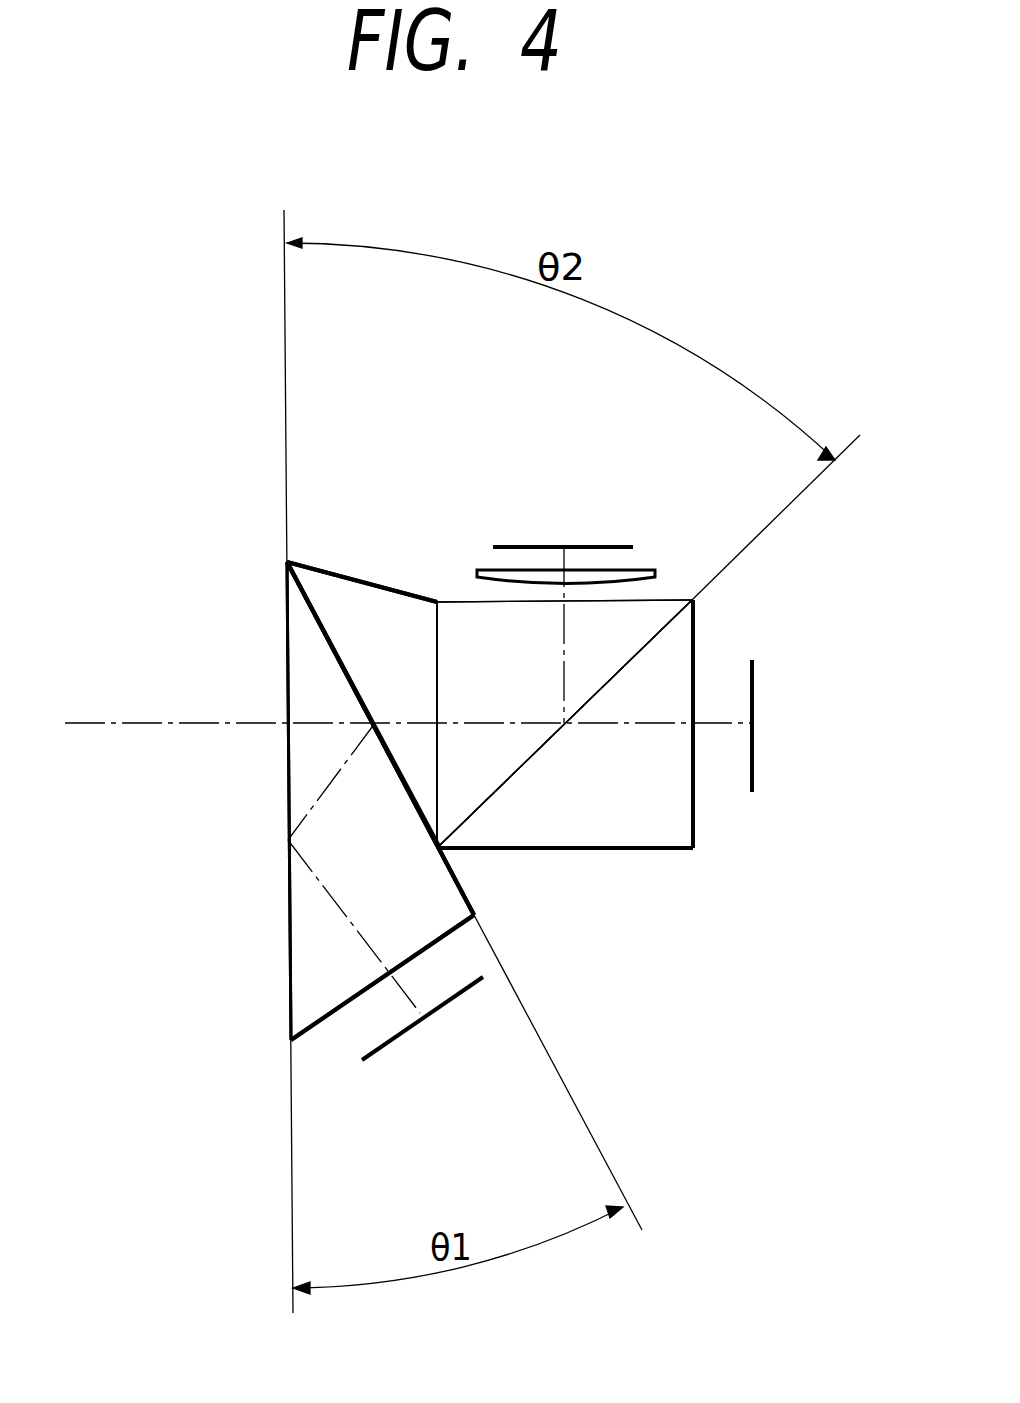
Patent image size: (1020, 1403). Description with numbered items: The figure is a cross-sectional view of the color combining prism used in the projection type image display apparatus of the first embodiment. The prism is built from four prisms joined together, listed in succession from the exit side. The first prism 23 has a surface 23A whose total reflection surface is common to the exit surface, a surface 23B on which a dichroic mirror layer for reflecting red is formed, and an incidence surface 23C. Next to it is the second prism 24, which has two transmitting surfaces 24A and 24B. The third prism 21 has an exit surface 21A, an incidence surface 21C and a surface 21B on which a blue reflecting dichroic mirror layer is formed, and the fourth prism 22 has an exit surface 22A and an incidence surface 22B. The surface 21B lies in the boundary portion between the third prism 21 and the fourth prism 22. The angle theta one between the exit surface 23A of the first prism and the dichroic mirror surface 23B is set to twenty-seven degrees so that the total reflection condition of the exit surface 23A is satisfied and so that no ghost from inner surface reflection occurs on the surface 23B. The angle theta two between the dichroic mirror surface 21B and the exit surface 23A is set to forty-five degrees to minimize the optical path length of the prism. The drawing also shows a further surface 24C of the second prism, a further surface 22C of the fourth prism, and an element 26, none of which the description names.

The third prism 21 is at (657, 600).
The exit surface 21A is at (433, 637).
The surface on which blue reflecting dichroic mirror layer is formed 21B is at (648, 648).
The incidence surface 21C is at (682, 600).
The fourth prism 22 is at (665, 850).
The exit surface 22A is at (643, 724).
The incidence surface 22B is at (695, 810).
The surface of second prism 22C is at (602, 850).
The first prism 23 is at (288, 972).
The surface of which total reflection surface is common to exit surface 23A is at (288, 798).
The surface on which dichroic mirror layer for reflecting red is formed 23B is at (337, 658).
The incidence surface 23C is at (337, 1017).
The second prism 24 is at (352, 577).
The transmitting surface 24A is at (309, 738).
The transmitting surface 24B is at (412, 649).
The surface of fourth prism 24C is at (322, 565).
The lens 26 is at (485, 570).